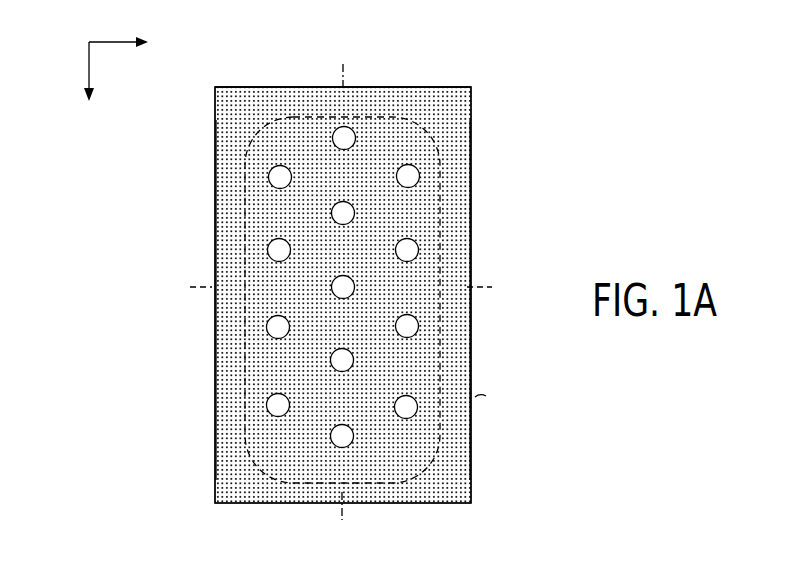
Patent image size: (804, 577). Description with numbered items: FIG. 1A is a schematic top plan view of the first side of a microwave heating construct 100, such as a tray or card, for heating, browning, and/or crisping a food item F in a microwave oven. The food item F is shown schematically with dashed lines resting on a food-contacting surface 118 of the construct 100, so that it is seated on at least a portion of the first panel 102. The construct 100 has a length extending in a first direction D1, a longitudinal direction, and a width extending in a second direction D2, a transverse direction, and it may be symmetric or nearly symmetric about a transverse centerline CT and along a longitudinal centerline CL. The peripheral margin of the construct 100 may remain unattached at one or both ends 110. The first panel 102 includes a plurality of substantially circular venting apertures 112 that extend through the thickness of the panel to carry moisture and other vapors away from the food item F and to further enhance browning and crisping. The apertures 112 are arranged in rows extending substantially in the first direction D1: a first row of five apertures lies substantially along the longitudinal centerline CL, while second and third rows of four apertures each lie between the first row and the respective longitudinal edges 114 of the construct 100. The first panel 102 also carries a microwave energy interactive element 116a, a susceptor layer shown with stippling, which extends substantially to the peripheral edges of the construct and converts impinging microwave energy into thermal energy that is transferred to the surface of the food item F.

The microwave heating construct 100 is at (536, 99).
The first panel 102 is at (272, 96).
The ends 110 is at (204, 82).
The venting apertures 112 is at (418, 325).
The longitudinal edges 114 is at (215, 385).
The microwave energy interactive element 116a is at (464, 216).
The food-contacting surface 118 is at (466, 119).
The transverse centerline CT is at (340, 287).
The longitudinal centerline CL is at (341, 295).
The food item F is at (493, 395).
The first direction D1 is at (68, 74).
The second direction D2 is at (118, 25).